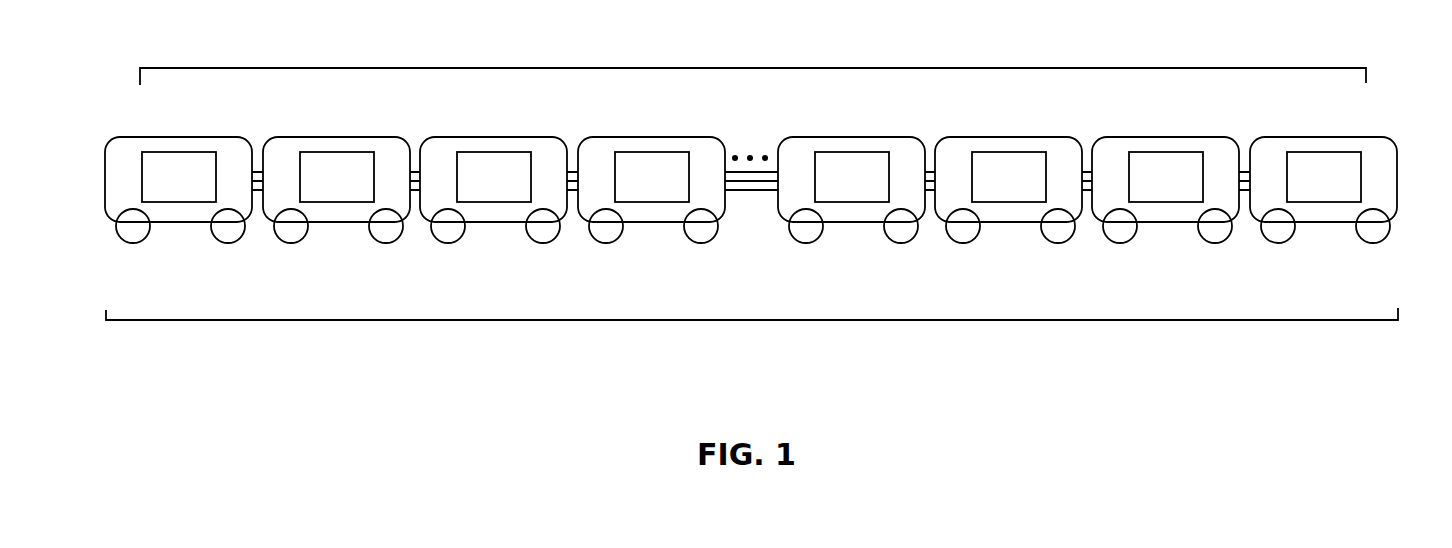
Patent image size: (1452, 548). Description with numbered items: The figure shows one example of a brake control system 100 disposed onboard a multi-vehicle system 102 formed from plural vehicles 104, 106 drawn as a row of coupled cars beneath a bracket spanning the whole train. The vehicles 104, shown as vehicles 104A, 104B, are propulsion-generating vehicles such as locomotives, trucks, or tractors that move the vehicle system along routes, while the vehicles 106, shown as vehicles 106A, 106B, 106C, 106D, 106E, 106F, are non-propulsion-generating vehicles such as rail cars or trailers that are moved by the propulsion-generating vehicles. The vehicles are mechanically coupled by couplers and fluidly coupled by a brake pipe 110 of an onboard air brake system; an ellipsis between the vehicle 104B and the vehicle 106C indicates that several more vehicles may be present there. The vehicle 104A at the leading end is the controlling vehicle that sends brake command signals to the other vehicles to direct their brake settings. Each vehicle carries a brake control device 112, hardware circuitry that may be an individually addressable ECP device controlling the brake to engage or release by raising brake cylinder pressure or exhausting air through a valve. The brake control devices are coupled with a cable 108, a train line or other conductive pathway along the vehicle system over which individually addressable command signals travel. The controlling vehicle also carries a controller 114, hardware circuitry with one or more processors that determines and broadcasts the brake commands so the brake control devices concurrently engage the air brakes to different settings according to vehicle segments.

The brake control system 100 is at (755, 68).
The multi-vehicle system 102 is at (752, 320).
The propulsion-generating vehicle 104 is at (150, 126).
The controlling vehicle 104A is at (175, 222).
The propulsion-generating vehicle 104B is at (648, 222).
The non-propulsion-generating vehicle 106 is at (1352, 127).
The non-propulsion-generating vehicle 106A is at (333, 222).
The non-propulsion-generating vehicle 106B is at (490, 222).
The non-propulsion-generating vehicle 106C is at (848, 222).
The non-propulsion-generating vehicle 106D is at (1005, 222).
The non-propulsion-generating vehicle 106E is at (1162, 222).
The non-propulsion-generating vehicle 106F is at (1320, 222).
The cable 108 is at (258, 172).
The brake pipe 110 is at (416, 191).
The brake control device 112 is at (318, 193).
The controller 114 is at (160, 193).